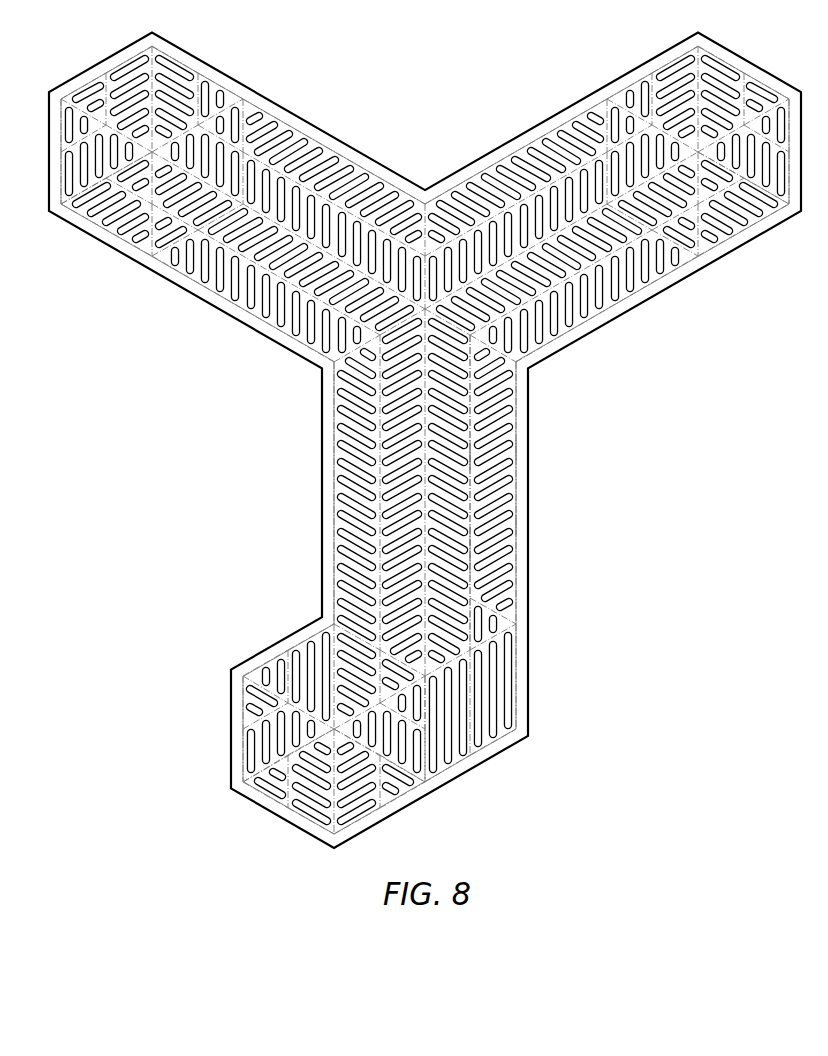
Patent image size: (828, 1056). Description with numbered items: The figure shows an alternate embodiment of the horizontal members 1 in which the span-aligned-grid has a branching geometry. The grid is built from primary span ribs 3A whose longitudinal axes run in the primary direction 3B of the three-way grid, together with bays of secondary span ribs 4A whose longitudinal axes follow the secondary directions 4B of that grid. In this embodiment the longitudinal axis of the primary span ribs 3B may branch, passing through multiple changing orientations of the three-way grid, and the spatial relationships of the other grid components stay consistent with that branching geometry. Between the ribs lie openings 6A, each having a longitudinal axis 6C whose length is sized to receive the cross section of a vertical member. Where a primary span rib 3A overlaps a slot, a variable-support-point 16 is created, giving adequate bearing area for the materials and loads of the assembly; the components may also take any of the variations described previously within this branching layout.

The horizontal member 1 is at (527, 375).
The variable-support-point 16 is at (472, 463).
The opening 6A is at (508, 448).
The longitudinal axis of the opening 6C is at (497, 457).
The secondary span rib 4A is at (508, 523).
The secondary direction 4B is at (507, 533).
The primary span rib 3A is at (470, 547).
The primary direction 3B is at (467, 560).